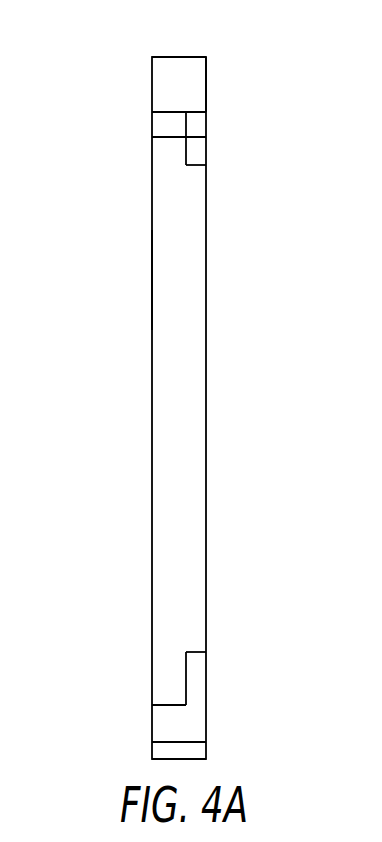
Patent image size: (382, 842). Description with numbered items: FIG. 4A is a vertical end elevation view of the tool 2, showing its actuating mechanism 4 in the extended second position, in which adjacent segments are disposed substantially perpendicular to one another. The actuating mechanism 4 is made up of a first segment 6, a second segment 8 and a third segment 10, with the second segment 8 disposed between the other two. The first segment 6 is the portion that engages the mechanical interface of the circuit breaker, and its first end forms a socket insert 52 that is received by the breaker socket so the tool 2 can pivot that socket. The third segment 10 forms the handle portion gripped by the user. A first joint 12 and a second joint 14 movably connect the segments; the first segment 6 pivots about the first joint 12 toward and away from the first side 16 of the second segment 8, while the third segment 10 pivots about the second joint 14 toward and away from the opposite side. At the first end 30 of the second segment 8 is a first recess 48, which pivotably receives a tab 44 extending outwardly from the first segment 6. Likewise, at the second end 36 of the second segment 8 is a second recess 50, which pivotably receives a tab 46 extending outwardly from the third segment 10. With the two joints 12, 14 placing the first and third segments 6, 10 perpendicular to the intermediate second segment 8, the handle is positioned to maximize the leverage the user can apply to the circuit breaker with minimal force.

The tool 2 is at (264, 516).
The actuating mechanism 4 is at (118, 519).
The first segment 6 is at (207, 80).
The second segment 8 is at (193, 323).
The third segment 10 is at (207, 735).
The first joint 12 is at (118, 723).
The second joint 14 is at (238, 121).
The first side 16 is at (166, 262).
The first end 30 is at (117, 130).
The second end 36 is at (122, 670).
The tab 44 is at (200, 153).
The tab 46 is at (200, 683).
The first recess 48 is at (186, 153).
The second recess 50 is at (186, 670).
The socket insert 52 is at (182, 63).